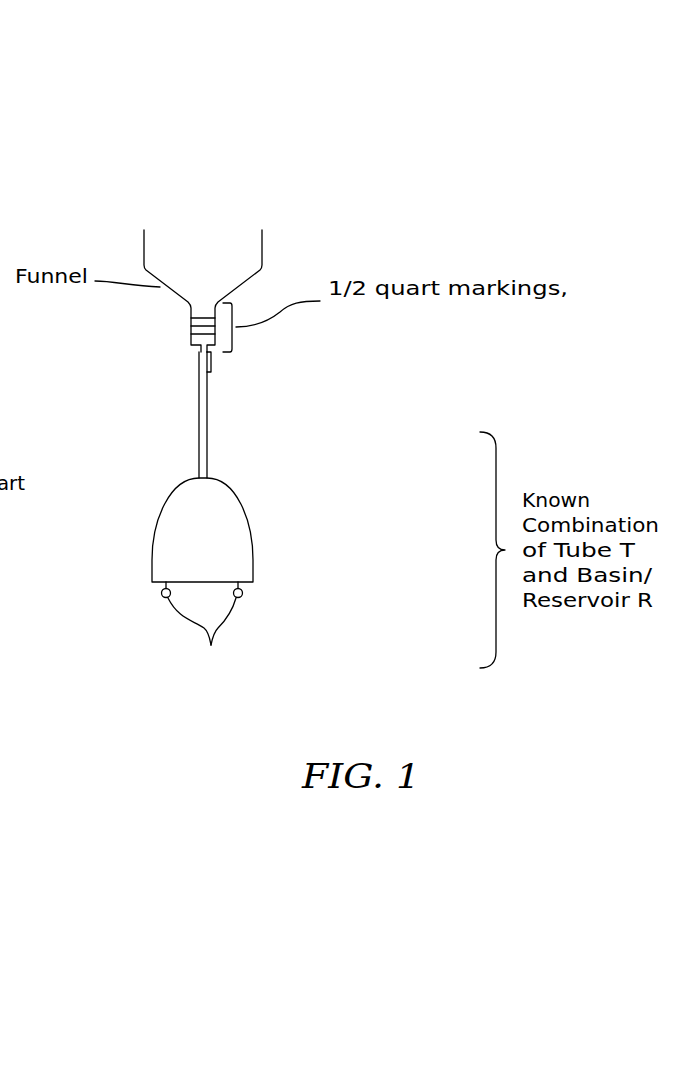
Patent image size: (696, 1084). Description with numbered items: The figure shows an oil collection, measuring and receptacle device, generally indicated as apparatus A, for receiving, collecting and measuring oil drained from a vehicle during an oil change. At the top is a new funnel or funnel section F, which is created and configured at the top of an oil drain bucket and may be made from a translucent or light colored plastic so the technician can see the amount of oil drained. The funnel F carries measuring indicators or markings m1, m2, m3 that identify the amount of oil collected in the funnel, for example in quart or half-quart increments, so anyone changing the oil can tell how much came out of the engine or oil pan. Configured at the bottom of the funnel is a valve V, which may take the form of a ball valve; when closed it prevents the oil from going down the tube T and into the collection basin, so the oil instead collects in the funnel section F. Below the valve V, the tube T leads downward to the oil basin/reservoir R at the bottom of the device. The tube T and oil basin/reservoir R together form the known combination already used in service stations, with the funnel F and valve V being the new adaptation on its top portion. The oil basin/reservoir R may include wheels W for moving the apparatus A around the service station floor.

The apparatus A is at (232, 178).
The funnel section F is at (266, 245).
The measuring indicator m1 is at (191, 337).
The measuring indicator m2 is at (191, 322).
The measuring indicator m3 is at (212, 319).
The valve V is at (213, 366).
The tube T is at (208, 445).
The oil basin/reservoir R is at (255, 556).
The wheels W is at (213, 630).